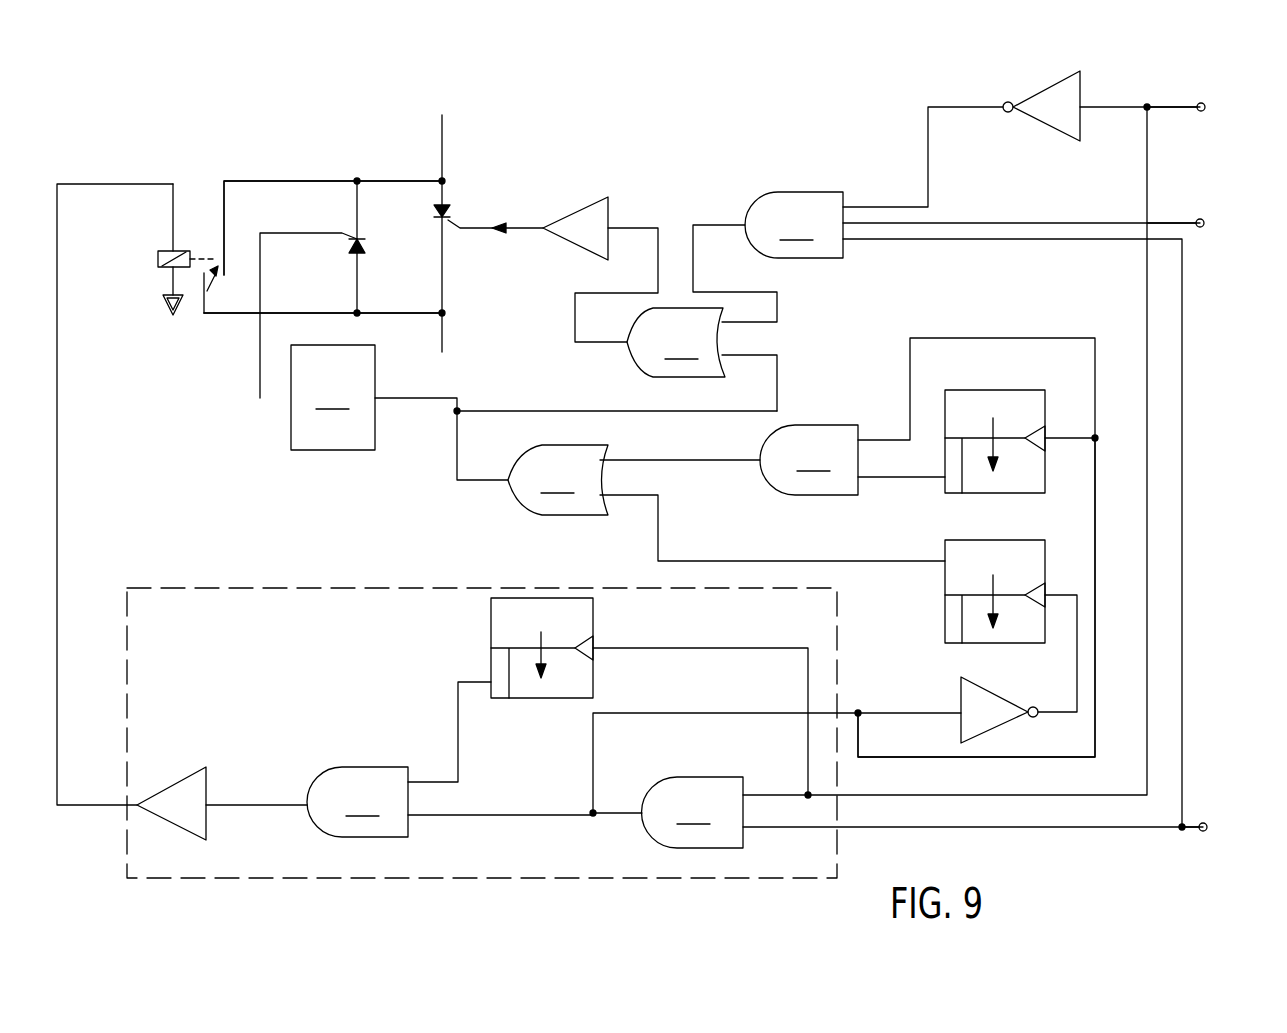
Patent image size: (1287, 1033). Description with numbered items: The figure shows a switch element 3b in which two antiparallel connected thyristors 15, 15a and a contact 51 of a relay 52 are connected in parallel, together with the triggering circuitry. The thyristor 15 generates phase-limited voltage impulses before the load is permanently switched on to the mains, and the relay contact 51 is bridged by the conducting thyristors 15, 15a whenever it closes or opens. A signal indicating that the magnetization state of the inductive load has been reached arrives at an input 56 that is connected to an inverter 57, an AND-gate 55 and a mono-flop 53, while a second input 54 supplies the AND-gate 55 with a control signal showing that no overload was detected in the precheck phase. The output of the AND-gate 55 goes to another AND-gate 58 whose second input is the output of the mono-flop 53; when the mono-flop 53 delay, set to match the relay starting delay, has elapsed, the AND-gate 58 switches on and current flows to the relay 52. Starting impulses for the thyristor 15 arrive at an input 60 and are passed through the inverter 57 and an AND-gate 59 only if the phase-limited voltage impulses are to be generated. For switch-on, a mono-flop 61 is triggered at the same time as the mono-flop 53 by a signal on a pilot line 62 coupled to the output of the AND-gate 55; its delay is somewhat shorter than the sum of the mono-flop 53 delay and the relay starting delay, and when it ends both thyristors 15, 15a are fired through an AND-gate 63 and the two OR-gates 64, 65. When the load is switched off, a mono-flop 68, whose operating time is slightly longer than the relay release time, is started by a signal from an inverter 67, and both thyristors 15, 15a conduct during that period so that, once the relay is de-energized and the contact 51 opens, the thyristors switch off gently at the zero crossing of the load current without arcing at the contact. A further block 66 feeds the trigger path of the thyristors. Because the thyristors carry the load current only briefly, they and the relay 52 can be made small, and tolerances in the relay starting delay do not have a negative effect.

The switch element 3b is at (205, 153).
The thyristor 15 is at (447, 207).
The thyristor 15a is at (366, 259).
The relay contact 51 is at (221, 286).
The relay 52 is at (163, 251).
The mono-flop 53 is at (517, 691).
The input 54 is at (1207, 823).
The AND-gate 55 is at (693, 812).
The input 56 is at (1204, 103).
The inverter 57 is at (1053, 93).
The AND-gate 58 is at (357, 802).
The AND-gate 59 is at (794, 225).
The input 60 is at (1203, 220).
The mono-flop 61 is at (985, 400).
The pilot line 62 is at (933, 757).
The AND-gate 63 is at (809, 460).
The OR-gate 64 is at (676, 342).
The OR-gate 65 is at (558, 480).
The pulse generator 66 is at (333, 397).
The inverter 67 is at (1000, 701).
The mono-flop 68 is at (1010, 549).